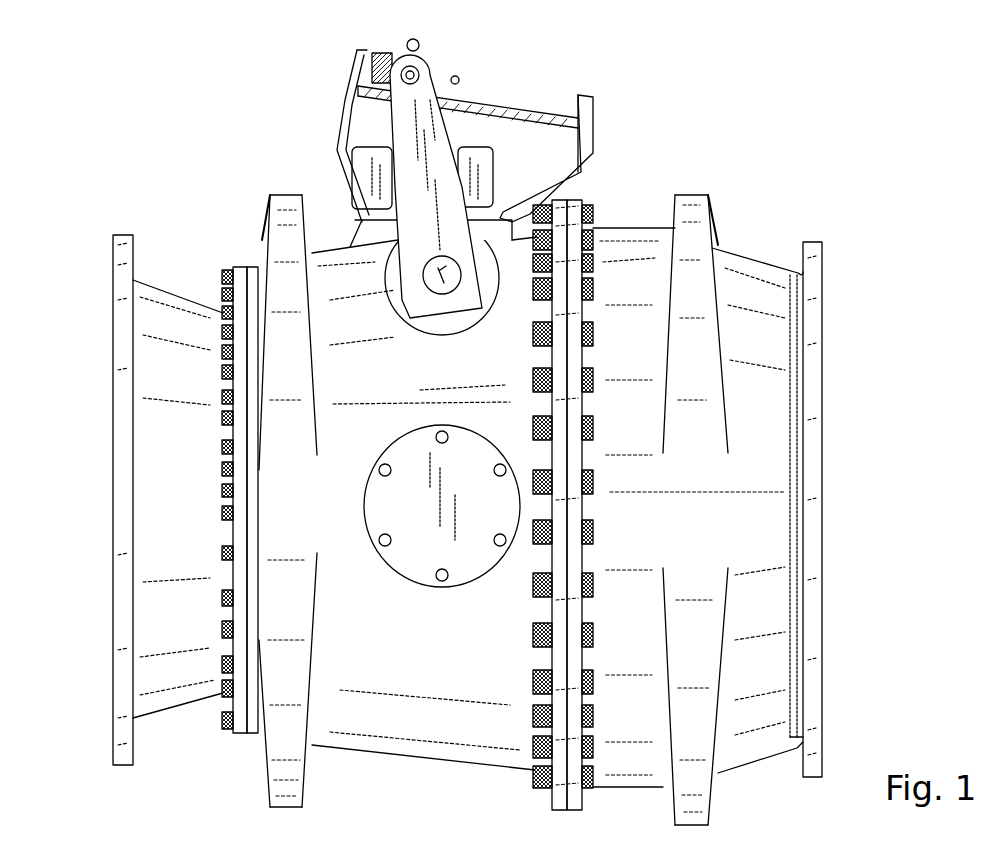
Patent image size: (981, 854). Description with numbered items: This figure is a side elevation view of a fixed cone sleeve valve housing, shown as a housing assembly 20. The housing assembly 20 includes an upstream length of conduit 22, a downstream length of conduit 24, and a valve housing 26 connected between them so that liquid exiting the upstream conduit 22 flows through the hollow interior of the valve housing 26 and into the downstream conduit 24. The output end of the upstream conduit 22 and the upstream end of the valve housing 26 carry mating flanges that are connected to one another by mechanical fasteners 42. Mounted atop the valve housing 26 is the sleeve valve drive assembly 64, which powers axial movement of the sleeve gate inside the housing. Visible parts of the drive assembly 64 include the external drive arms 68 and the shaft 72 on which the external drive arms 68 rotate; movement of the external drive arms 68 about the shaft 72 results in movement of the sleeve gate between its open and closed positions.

The housing assembly 20 is at (762, 197).
The upstream length of conduit 22 is at (172, 292).
The downstream length of conduit 24 is at (740, 772).
The valve housing 26 is at (381, 761).
The mechanical fasteners 42 is at (222, 603).
The sleeve valve drive assembly 64 is at (470, 58).
The external drive arms 68 is at (427, 143).
The shaft 72 is at (448, 265).